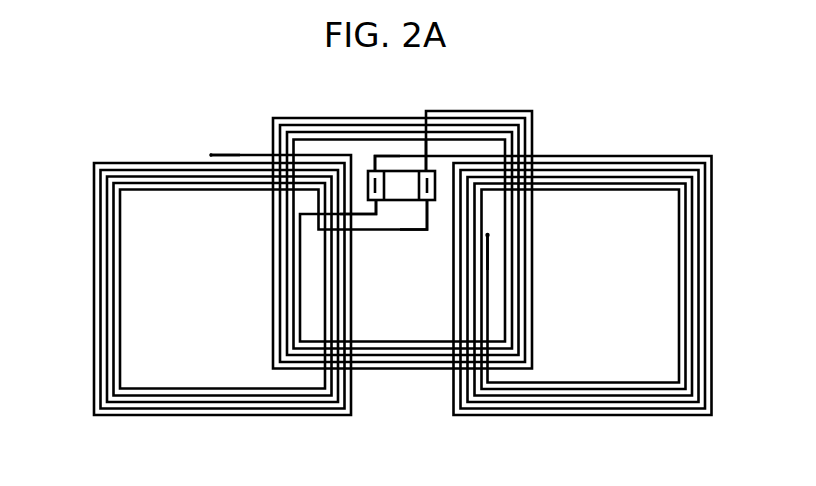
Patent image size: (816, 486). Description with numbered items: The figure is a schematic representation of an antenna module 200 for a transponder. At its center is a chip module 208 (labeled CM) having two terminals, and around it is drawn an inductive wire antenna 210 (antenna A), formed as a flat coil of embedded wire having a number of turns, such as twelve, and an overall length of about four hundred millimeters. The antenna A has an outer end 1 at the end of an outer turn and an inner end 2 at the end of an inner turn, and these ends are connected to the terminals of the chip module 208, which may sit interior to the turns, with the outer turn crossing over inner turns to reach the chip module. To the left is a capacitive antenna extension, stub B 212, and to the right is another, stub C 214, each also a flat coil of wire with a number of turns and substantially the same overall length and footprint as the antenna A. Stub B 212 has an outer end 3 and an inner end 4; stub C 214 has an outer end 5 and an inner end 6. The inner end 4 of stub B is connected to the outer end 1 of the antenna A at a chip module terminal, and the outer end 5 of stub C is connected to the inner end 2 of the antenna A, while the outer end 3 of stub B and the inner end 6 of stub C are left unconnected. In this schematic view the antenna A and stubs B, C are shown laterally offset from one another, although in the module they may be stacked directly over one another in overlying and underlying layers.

The antenna module 200 is at (168, 63).
The chip module 208 is at (404, 170).
The inductive wire antenna 210 is at (318, 101).
The stub B 212 is at (122, 162).
The stub C 214 is at (660, 141).
The outer end 1 is at (436, 160).
The inner end 2 is at (363, 212).
The outer end 3 is at (218, 153).
The inner end 4 is at (420, 215).
The outer end 5 is at (380, 161).
The inner end 6 is at (487, 237).